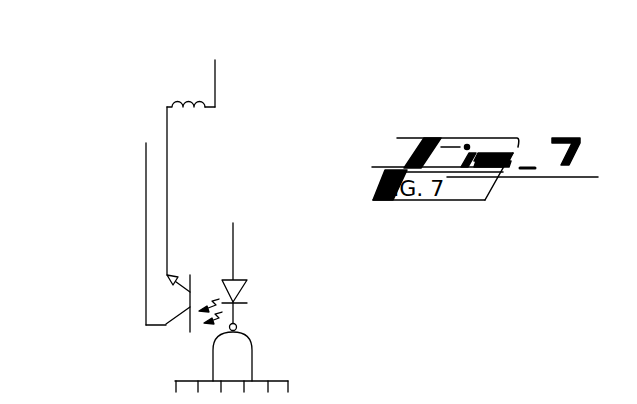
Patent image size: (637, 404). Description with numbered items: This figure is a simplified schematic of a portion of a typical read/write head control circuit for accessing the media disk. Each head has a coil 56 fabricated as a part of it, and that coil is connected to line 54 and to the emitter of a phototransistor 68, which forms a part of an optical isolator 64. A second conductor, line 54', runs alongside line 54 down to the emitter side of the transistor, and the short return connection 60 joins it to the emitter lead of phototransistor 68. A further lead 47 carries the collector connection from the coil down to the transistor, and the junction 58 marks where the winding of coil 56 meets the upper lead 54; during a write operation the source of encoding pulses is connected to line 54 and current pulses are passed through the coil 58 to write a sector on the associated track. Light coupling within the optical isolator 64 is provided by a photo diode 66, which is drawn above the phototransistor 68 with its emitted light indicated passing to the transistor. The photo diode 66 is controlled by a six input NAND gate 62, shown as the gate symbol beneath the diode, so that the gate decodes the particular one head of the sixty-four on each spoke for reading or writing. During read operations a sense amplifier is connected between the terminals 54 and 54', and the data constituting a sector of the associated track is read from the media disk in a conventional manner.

The collector supply line 47 is at (192, 66).
The line 54 is at (280, 57).
The terminal 54' is at (84, 227).
The coil 56 is at (166, 96).
The coil 58 is at (202, 110).
The return line 60 is at (124, 341).
The six input NAND gate 62 is at (268, 341).
The optical isolator 64 is at (203, 250).
The photo diode 66 is at (266, 293).
The phototransistor 68 is at (174, 325).